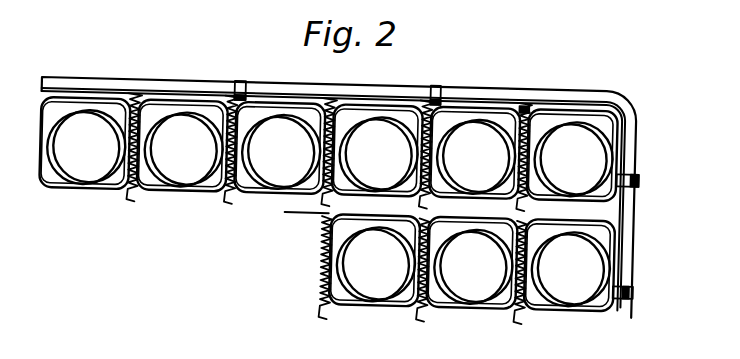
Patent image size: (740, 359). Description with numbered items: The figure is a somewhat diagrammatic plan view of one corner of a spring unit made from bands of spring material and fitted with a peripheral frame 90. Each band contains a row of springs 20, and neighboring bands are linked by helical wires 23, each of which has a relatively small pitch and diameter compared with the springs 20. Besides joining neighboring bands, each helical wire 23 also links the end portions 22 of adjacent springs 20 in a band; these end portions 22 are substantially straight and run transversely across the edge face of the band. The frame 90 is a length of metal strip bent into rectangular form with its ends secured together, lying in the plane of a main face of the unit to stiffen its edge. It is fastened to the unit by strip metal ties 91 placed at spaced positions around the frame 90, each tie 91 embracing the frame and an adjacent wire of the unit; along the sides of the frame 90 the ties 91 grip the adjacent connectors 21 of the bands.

The spring 20 is at (313, 160).
The connector 21 is at (187, 96).
The end portion 22 is at (519, 107).
The helical wire 23 is at (468, 102).
The peripheral frame 90 is at (588, 95).
The strip metal tie 91 is at (251, 78).